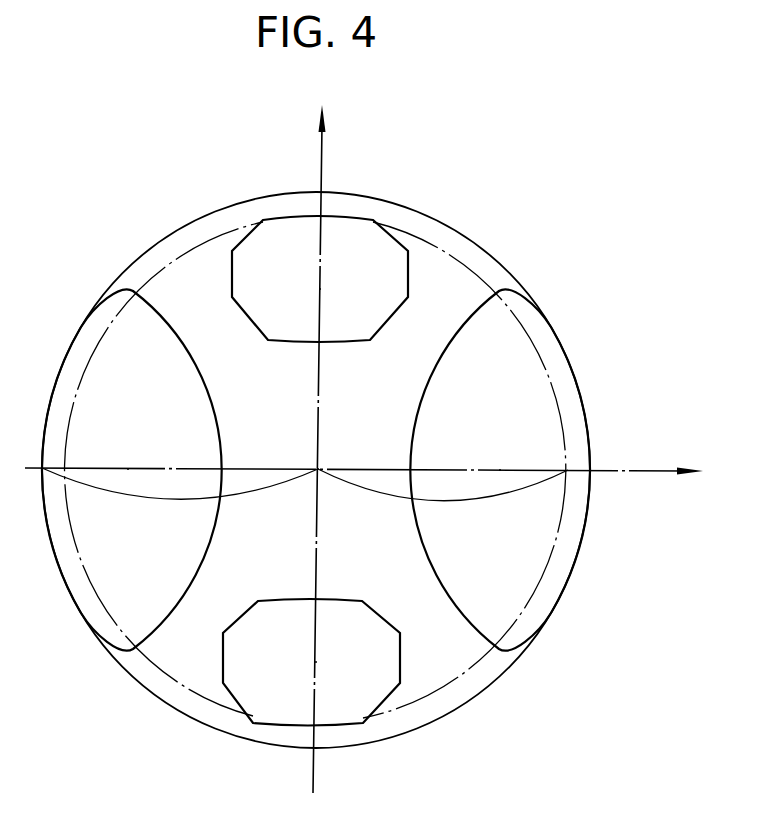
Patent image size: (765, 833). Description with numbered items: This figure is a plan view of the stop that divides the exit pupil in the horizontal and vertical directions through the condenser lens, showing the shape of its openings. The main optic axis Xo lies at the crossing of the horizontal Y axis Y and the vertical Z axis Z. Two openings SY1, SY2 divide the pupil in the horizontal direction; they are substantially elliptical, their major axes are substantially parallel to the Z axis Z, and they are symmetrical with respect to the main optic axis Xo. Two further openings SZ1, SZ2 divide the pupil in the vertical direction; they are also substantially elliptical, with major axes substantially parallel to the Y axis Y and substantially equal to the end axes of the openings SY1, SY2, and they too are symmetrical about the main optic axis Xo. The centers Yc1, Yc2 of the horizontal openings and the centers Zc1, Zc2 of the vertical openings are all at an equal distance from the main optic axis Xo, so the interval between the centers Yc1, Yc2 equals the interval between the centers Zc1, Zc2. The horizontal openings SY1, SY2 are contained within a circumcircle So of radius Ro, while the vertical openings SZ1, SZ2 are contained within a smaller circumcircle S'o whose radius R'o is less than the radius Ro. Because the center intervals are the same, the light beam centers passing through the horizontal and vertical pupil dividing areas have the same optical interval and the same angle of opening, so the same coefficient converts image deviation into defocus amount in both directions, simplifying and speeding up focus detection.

The circumcircle So is at (222, 207).
The circumcircle S'o is at (315, 459).
The opening SZ1 is at (398, 243).
The opening SZ2 is at (232, 695).
The opening SY1 is at (103, 634).
The opening SY2 is at (533, 307).
The radius of circumcircle So Ro is at (180, 491).
The radius of circumcircle So' R'o is at (443, 491).
The main optic axis Xo is at (318, 470).
The center of opening SZ1 Zc1 is at (322, 288).
The center of opening SZ2 Zc2 is at (317, 662).
The center of opening SY1 Yc1 is at (128, 469).
The center of opening SY2 Yc2 is at (500, 470).
The Y axis Y is at (364, 451).
The Z axis Z is at (320, 432).